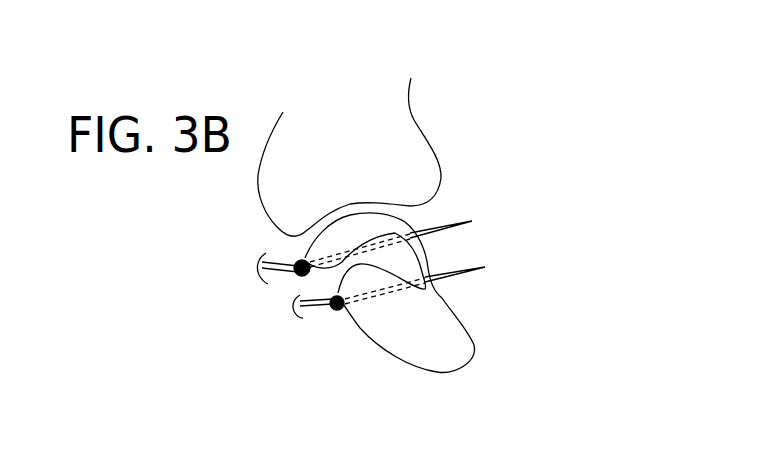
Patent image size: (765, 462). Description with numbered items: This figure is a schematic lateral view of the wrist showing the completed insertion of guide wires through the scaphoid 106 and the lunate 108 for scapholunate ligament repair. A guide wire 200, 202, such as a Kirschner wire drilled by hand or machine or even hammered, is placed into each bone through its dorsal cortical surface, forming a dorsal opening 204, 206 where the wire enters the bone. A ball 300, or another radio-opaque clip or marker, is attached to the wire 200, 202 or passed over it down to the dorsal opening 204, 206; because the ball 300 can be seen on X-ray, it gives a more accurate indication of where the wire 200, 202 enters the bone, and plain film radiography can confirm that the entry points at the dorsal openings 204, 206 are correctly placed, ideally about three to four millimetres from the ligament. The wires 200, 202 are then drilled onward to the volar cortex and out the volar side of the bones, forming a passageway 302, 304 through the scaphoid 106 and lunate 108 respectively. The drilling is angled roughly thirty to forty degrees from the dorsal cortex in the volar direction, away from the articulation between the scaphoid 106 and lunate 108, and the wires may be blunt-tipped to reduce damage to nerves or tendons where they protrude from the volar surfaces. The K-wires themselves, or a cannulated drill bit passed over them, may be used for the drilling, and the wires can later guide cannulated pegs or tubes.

The scaphoid 106 is at (433, 344).
The lunate 108 is at (388, 228).
The guide wire 200 is at (307, 315).
The guide wire 202 is at (262, 270).
The dorsal opening 204 is at (350, 306).
The dorsal opening 206 is at (305, 256).
The ball 300 is at (291, 261).
The passageway 302 is at (413, 230).
The passageway 304 is at (340, 246).